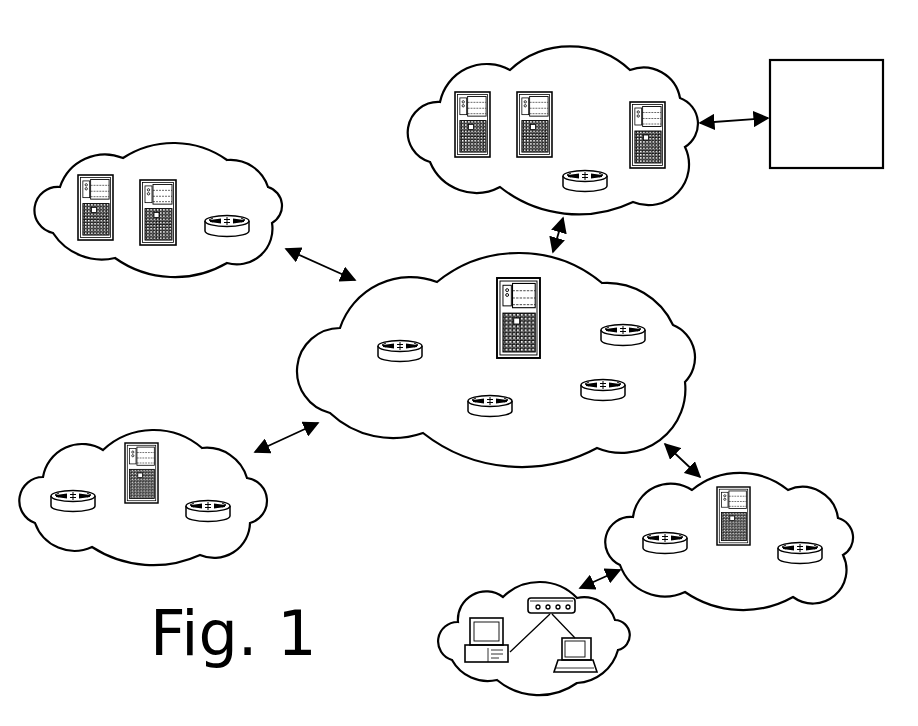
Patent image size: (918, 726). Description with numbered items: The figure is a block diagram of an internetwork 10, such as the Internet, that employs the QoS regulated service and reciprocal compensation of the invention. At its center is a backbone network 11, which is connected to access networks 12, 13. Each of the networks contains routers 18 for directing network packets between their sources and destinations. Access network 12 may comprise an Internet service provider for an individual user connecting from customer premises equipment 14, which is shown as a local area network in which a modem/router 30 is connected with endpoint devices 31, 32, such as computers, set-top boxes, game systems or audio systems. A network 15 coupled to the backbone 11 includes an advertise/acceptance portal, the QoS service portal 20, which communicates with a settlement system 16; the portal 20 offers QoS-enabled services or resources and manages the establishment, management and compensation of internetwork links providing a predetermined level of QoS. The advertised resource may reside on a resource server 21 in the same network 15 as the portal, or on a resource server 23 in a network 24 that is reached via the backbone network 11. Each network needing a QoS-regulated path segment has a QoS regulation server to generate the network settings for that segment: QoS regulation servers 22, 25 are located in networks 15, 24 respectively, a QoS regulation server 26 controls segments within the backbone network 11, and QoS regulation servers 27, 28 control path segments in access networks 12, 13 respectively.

The internetwork 10 is at (790, 322).
The backbone network 11 is at (673, 302).
The access network 12 is at (817, 490).
The access network 13 is at (80, 442).
The customer premises equipment 14 is at (487, 590).
The network 15 is at (613, 53).
The settlement system 16 is at (812, 170).
The routers 18 is at (577, 170).
The QoS service portal 20 is at (653, 103).
The resource server 21 is at (533, 92).
The QoS regulation server 22 is at (472, 92).
The resource server 23 is at (157, 180).
The network 24 is at (180, 142).
The QoS regulation server 25 is at (95, 175).
The QoS regulation server 26 is at (495, 292).
The QoS regulation server 27 is at (752, 497).
The QoS regulation server 28 is at (162, 463).
The modem/router 30 is at (542, 598).
The endpoint device 31 is at (467, 636).
The endpoint device 32 is at (592, 650).